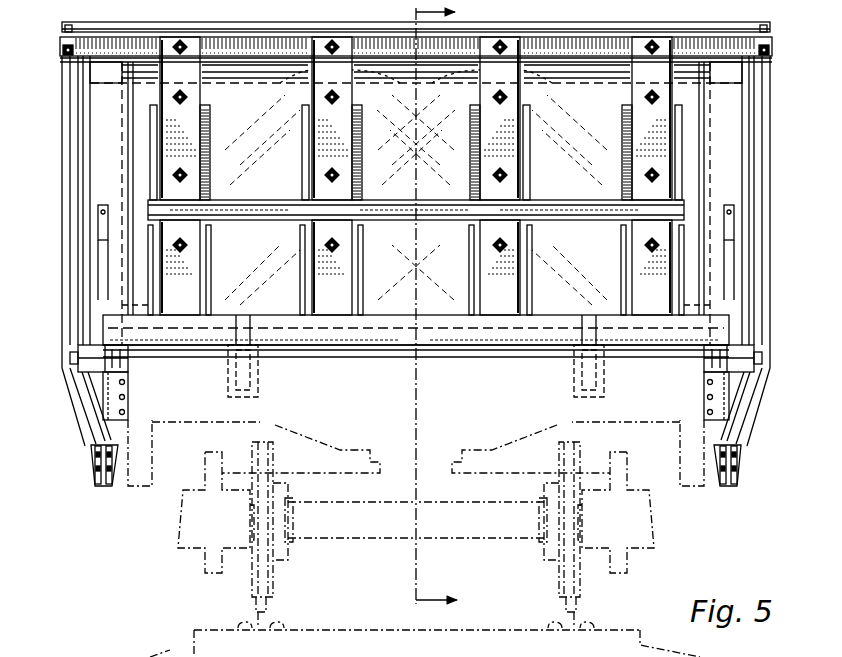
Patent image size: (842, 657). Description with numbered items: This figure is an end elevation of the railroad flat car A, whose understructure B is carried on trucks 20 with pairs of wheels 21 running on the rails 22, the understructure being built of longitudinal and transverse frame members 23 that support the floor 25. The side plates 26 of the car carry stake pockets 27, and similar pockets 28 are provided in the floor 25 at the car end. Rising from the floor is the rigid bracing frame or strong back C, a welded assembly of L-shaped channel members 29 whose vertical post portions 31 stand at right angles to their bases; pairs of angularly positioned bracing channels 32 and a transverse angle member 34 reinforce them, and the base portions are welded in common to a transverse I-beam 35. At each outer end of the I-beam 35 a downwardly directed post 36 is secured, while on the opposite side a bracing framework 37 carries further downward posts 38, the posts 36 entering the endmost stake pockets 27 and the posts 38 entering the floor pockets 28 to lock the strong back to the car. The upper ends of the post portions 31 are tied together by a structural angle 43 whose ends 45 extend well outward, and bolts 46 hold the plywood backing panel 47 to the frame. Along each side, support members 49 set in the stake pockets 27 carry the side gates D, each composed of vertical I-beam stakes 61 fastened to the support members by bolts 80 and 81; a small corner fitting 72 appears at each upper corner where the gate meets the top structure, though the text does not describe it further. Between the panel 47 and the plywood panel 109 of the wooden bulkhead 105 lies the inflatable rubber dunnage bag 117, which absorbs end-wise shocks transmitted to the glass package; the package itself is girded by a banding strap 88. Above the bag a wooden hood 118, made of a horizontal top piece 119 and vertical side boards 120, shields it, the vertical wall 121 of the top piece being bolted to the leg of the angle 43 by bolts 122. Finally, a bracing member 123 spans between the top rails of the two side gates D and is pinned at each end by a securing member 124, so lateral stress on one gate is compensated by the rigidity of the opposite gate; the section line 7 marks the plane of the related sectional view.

The section line 7 is at (403, 20).
The truck 20 is at (190, 531).
The wheels 21 is at (264, 578).
The rails 22 is at (258, 616).
The frame members 23 is at (498, 435).
The floor 25 is at (350, 355).
The side plates 26 is at (152, 451).
The stake pockets 27 is at (112, 398).
The pockets 28 is at (262, 390).
The L-shaped channel members 29 is at (342, 139).
The post portions 31 is at (190, 140).
The bracing channels 32 is at (300, 273).
The angle member 34 is at (431, 216).
The I-beam 35 is at (215, 326).
The downwardly directed post 36 is at (114, 366).
The bracing framework 37 is at (428, 338).
The downwardly directed posts 38 is at (238, 334).
The structural angle 43 is at (237, 52).
The angle ends 45 is at (100, 50).
The bolts 46 is at (340, 175).
The backing panel 47 is at (590, 278).
The support members 49 is at (745, 385).
The stakes 61 is at (62, 143).
The corner block 72 is at (66, 54).
The bolts 80 is at (94, 470).
The bolts 81 is at (70, 358).
The metal strap 88 is at (100, 268).
The end frames 105 is at (112, 168).
The panel 109 is at (136, 232).
The inflatable rubber bags 117 is at (376, 74).
The wooden hood 118 is at (128, 180).
The top piece 119 is at (143, 70).
The side boards 120 is at (127, 193).
The vertical wall 121 is at (592, 61).
The bolts 122 is at (330, 48).
The bracing members 123 is at (712, 28).
The securing member 124 is at (64, 29).
The railroad flat car A is at (150, 495).
The understructure B is at (256, 430).
The strong back C is at (680, 150).
The side gates D is at (62, 120).